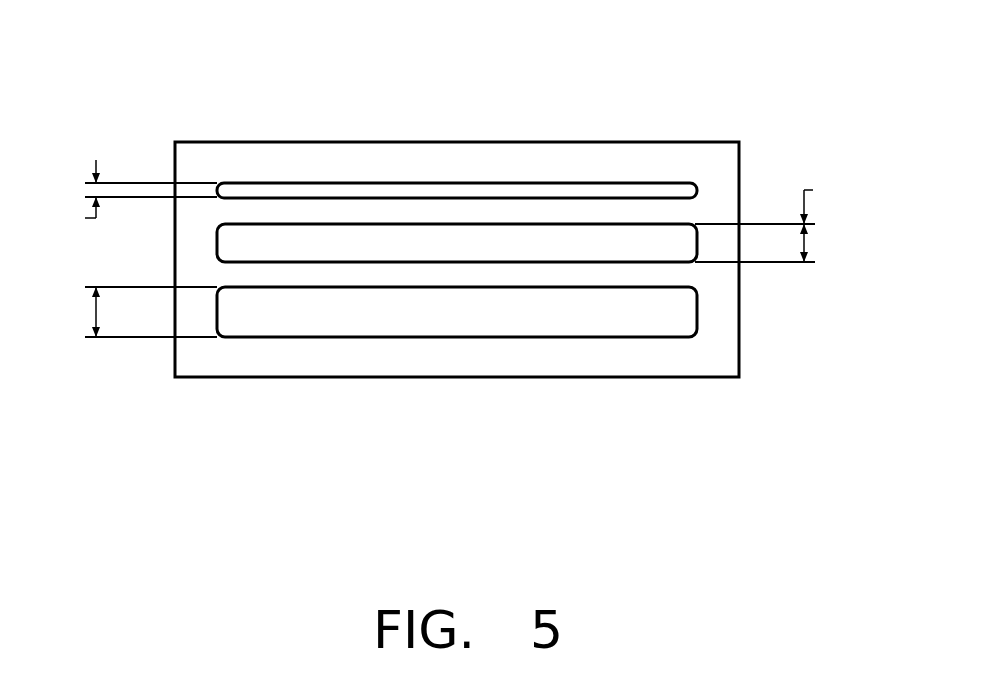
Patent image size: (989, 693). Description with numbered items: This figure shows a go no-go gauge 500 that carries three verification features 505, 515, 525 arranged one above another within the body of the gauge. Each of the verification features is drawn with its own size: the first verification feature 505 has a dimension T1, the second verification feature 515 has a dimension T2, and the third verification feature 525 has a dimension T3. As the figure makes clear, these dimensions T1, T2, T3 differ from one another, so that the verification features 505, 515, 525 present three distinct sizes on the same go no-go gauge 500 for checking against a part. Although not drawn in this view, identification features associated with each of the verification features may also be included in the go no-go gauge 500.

The go no-go gauge 500 is at (778, 101).
The verification feature 505 is at (333, 181).
The verification feature 515 is at (215, 239).
The verification feature 525 is at (305, 340).
The dimension T1 is at (132, 195).
The dimension T2 is at (775, 219).
The dimension T3 is at (151, 312).